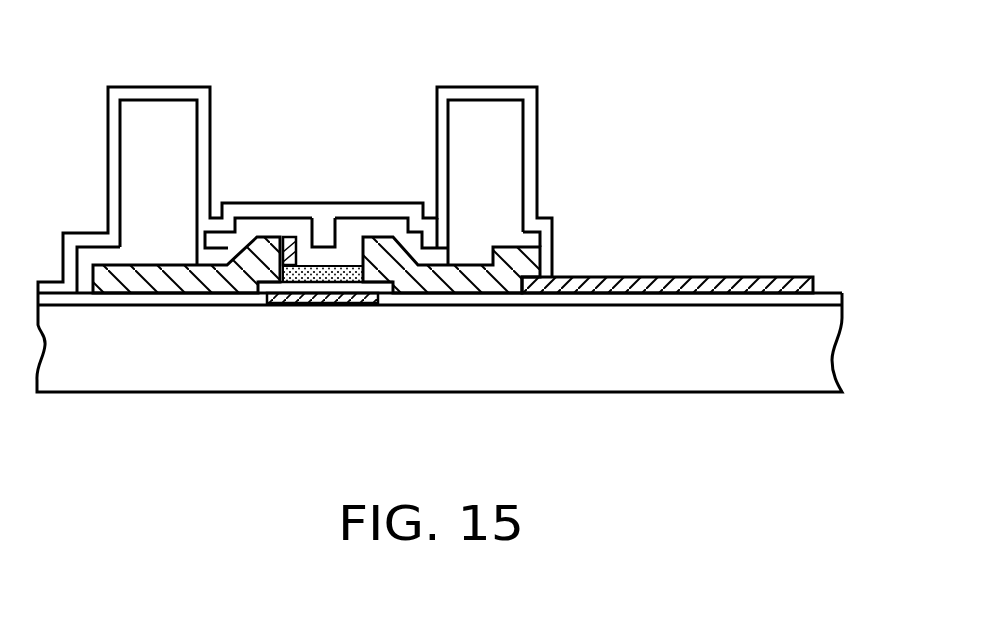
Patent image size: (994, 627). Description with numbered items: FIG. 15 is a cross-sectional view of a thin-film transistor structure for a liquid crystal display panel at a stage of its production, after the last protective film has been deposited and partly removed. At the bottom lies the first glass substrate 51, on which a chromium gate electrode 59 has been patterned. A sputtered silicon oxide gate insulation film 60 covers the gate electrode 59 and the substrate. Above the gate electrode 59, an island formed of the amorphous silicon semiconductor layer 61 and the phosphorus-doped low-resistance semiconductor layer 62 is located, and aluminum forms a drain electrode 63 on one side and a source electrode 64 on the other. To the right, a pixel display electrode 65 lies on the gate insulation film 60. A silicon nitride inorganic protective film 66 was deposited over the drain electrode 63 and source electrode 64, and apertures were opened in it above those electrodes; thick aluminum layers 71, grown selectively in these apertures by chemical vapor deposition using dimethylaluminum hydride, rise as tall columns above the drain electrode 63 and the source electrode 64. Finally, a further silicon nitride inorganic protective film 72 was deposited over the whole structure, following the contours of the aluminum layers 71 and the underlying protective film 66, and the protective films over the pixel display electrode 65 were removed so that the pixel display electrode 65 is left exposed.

The first glass substrate 51 is at (640, 367).
The gate electrode 59 is at (360, 303).
The gate insulation film 60 is at (513, 300).
The semiconductor layer 61 is at (302, 282).
The low-resistance semiconductor layer 62 is at (289, 243).
The drain electrode 63 is at (243, 258).
The source electrode 64 is at (397, 250).
The pixel display electrode 65 is at (700, 282).
The inorganic protective film 66 is at (362, 227).
The aluminum layers 71 is at (168, 120).
The inorganic protective film 72 is at (530, 133).